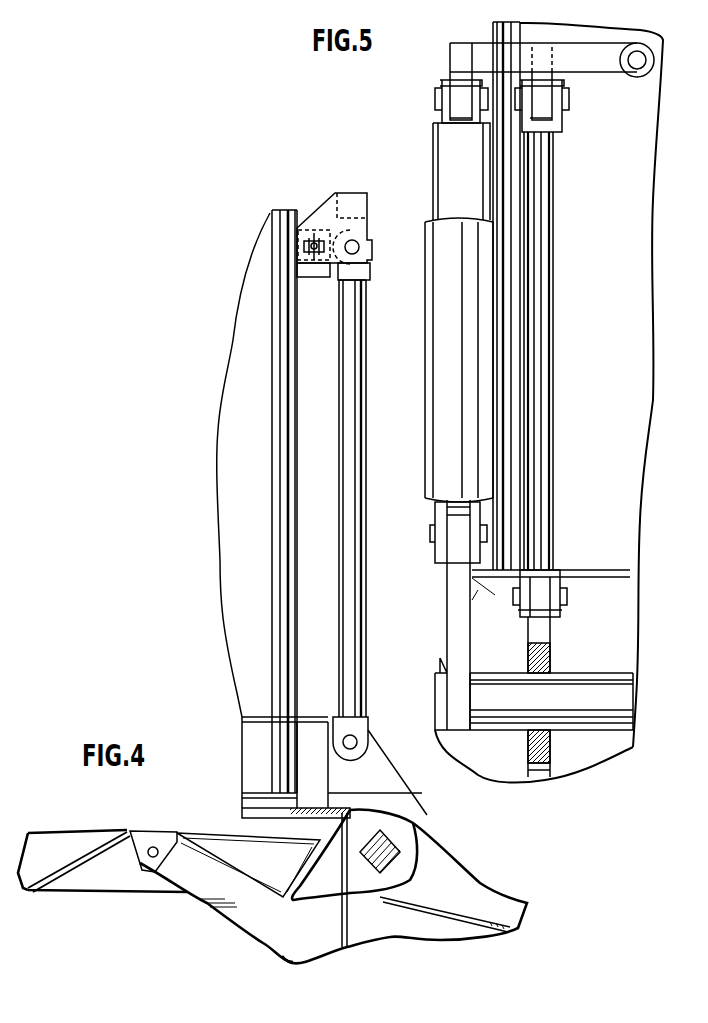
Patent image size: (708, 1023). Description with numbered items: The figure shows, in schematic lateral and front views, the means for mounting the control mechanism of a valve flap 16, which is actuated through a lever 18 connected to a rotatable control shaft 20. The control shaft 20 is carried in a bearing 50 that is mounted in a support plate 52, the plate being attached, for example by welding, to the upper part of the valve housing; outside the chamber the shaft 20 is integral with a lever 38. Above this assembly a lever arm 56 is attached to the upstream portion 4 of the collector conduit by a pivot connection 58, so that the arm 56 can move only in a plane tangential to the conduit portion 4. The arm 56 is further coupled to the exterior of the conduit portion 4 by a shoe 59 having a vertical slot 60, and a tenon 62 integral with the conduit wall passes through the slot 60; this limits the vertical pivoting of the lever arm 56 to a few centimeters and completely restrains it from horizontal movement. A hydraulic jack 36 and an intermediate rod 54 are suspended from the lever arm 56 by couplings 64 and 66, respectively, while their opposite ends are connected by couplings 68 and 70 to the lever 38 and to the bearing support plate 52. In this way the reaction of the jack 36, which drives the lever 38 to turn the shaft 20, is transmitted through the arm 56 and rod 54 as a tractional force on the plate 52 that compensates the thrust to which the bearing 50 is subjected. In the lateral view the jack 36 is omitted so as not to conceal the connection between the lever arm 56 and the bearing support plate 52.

In FIG. 4, the upstream portion of the collector conduit 4 is at (297, 410).
In FIG. 5, the upstream portion of the collector conduit 4 is at (505, 555).
In FIG. 4, the valve flap 16 is at (88, 877).
In FIG. 4, the lever 18 is at (260, 927).
In FIG. 5, the rotatable control shaft 20 is at (572, 692).
In FIG. 5, the hydraulic jack 36 is at (450, 307).
In FIG. 5, the lever 38 is at (458, 598).
In FIG. 5, the bearing 50 is at (550, 750).
In FIG. 4, the support plate 52 is at (427, 823).
In FIG. 5, the support plate 52 is at (543, 632).
In FIG. 4, the intermediate rod 54 is at (347, 458).
In FIG. 5, the intermediate rod 54 is at (543, 355).
In FIG. 4, the lever arm 56 is at (344, 203).
In FIG. 5, the lever arm 56 is at (485, 59).
In FIG. 5, the pivot connection 58 is at (636, 66).
In FIG. 4, the shoe 59 is at (322, 208).
In FIG. 4, the vertical slot 60 is at (268, 212).
In FIG. 4, the tenon 62 is at (315, 255).
In FIG. 5, the coupling 64 is at (446, 109).
In FIG. 5, the coupling 66 is at (557, 115).
In FIG. 5, the coupling 68 is at (431, 541).
In FIG. 5, the coupling 70 is at (565, 598).